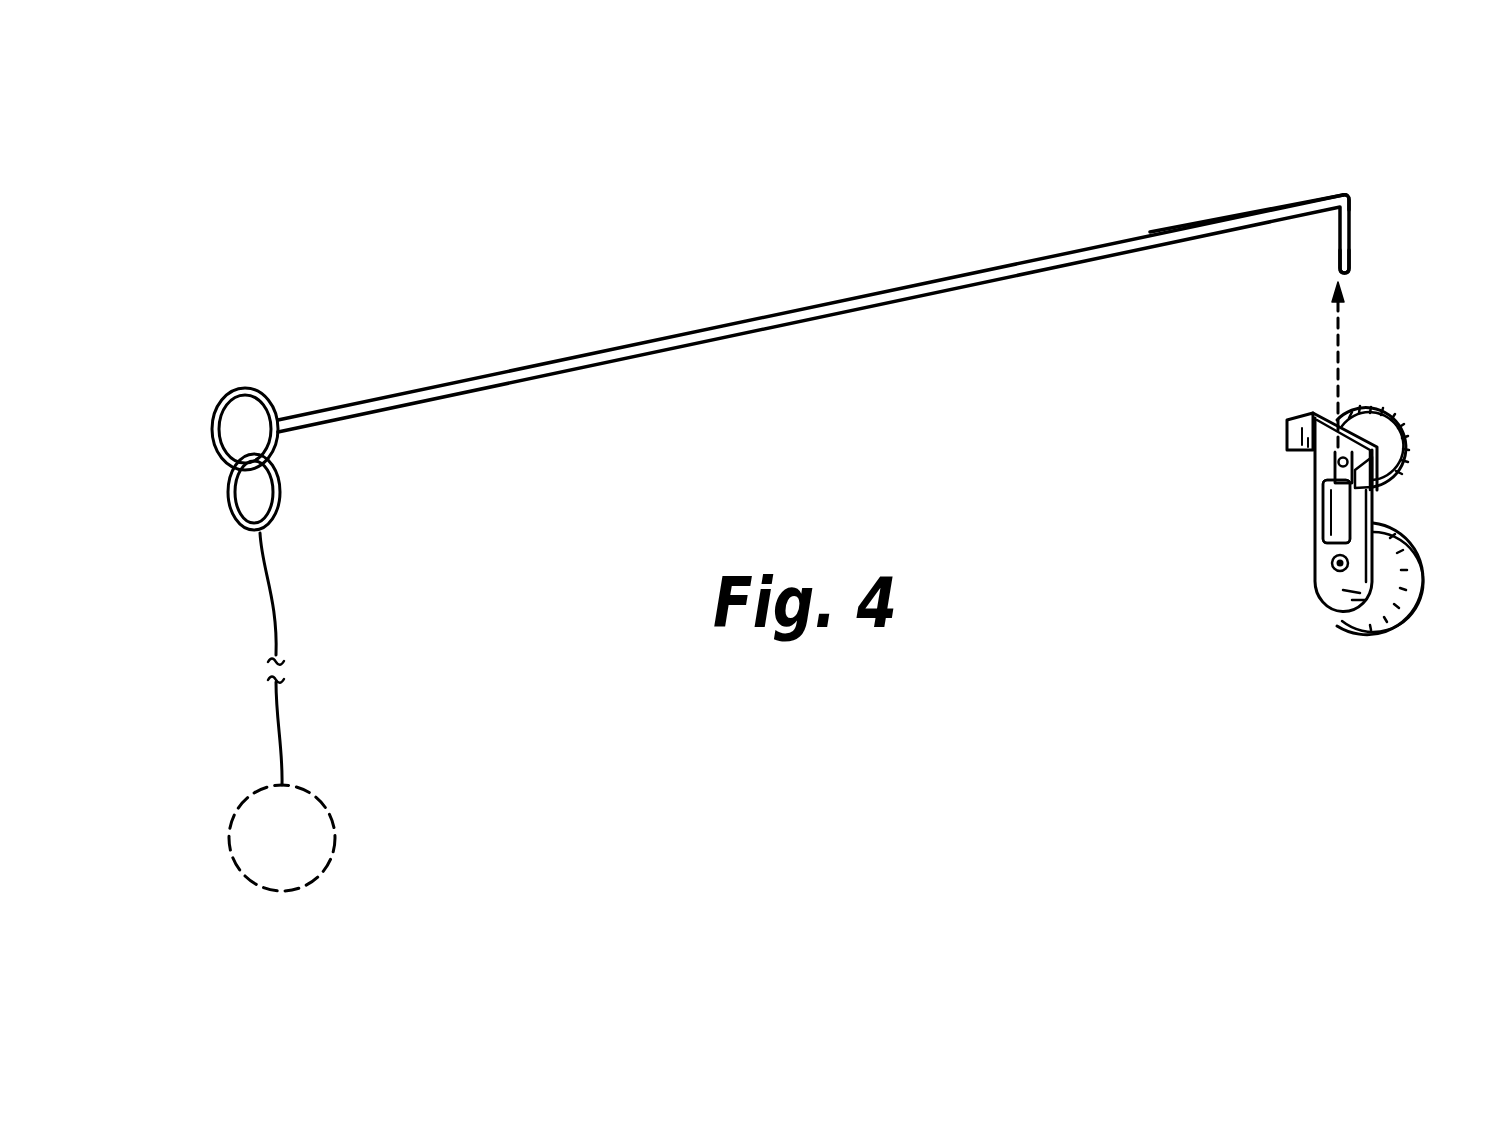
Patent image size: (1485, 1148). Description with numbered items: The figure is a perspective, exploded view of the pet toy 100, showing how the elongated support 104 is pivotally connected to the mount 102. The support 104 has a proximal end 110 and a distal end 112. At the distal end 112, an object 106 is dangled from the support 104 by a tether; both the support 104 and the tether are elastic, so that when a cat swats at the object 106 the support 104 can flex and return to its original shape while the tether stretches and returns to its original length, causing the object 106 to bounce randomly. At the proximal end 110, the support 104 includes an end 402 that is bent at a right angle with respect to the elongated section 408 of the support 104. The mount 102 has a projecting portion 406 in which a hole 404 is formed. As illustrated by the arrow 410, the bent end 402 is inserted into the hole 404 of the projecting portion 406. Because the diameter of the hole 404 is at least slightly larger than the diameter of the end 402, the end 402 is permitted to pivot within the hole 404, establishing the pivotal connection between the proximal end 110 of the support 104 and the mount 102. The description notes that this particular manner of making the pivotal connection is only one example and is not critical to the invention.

The pet toy 100 is at (1167, 200).
The mount 102 is at (1380, 513).
The elongated support 104 is at (740, 329).
The object 106 is at (305, 850).
The proximal end 110 is at (1352, 207).
The distal end 112 is at (210, 443).
The end 402 is at (1353, 272).
The hole 404 is at (1338, 480).
The projecting portion 406 is at (1327, 515).
The elongated section 408 is at (1255, 213).
The arrow 410 is at (1338, 372).